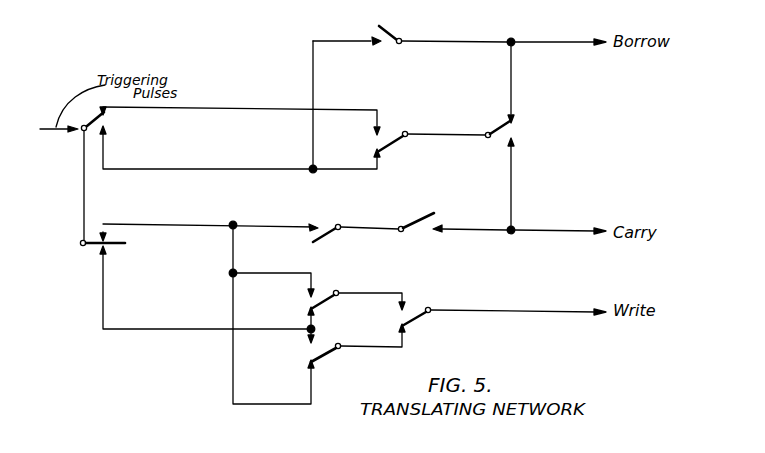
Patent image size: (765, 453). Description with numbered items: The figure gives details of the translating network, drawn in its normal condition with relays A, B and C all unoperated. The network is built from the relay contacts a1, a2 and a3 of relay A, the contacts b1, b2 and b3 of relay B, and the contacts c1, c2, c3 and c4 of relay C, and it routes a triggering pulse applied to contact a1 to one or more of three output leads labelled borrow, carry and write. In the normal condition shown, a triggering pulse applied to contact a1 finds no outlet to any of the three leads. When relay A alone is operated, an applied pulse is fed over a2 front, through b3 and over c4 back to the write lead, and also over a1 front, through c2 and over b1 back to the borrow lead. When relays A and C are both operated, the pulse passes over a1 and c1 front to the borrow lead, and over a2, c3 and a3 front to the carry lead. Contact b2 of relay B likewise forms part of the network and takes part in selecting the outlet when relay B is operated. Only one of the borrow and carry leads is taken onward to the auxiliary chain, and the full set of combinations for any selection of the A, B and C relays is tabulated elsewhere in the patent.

The contact a1 is at (107, 121).
The contact a2 is at (114, 243).
The contact a3 is at (418, 214).
The contact b1 is at (513, 130).
The contact b2 is at (325, 292).
The contact b3 is at (328, 345).
The contact c1 is at (393, 30).
The contact c2 is at (391, 133).
The contact c3 is at (325, 220).
The contact c4 is at (415, 309).